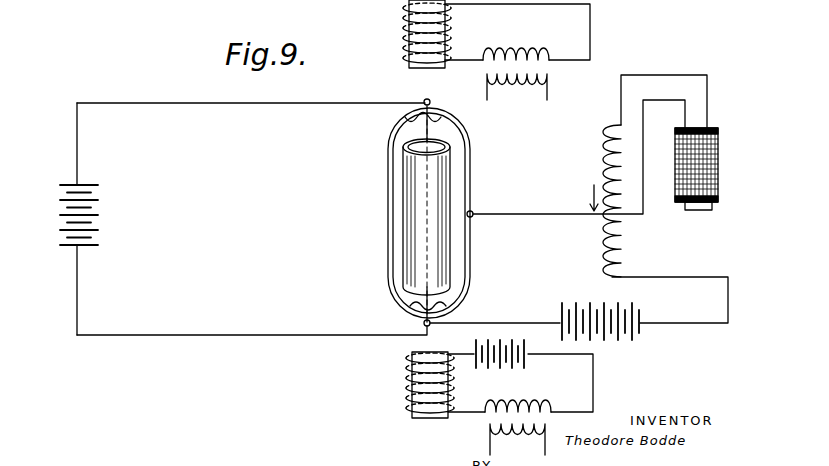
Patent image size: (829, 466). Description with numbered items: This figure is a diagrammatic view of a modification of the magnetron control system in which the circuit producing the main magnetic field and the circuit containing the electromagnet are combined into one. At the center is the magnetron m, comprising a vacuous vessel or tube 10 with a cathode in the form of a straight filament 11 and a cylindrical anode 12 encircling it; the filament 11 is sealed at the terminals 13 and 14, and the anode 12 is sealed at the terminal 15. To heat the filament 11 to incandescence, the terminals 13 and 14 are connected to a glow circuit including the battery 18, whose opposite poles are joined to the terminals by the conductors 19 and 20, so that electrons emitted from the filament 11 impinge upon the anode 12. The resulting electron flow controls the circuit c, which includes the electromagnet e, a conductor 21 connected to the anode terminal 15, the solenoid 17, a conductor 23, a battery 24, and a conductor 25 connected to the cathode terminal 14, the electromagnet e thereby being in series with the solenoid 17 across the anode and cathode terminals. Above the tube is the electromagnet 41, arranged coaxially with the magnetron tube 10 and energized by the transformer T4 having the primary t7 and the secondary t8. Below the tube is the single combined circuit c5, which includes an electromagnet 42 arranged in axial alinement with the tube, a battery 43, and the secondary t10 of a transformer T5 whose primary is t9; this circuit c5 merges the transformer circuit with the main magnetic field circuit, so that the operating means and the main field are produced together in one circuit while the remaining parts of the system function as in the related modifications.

The vacuous vessel or tube 10 is at (451, 213).
The filament 11 is at (430, 131).
The cylindrical anode 12 is at (450, 194).
The terminal 13 is at (431, 101).
The terminal 14 is at (424, 323).
The terminal 15 is at (473, 217).
The solenoid 17 is at (604, 176).
The battery 18 is at (98, 216).
The conductor 19 is at (300, 104).
The conductor 20 is at (302, 334).
The conductor 21 is at (645, 214).
The conductor 23 is at (695, 278).
The battery 24 is at (575, 300).
The conductor 25 is at (510, 312).
The electromagnet 41 is at (447, 33).
The electromagnet 42 is at (410, 382).
The battery 43 is at (527, 368).
The magnetron m is at (466, 152).
The circuit c is at (644, 178).
The electromagnet e is at (719, 152).
The primary t7 is at (522, 81).
The secondary t8 is at (514, 56).
The transformer T4 is at (568, 78).
The circuit c5 is at (468, 411).
The primary t9 is at (516, 429).
The secondary t10 is at (548, 407).
The transformer T5 is at (567, 421).